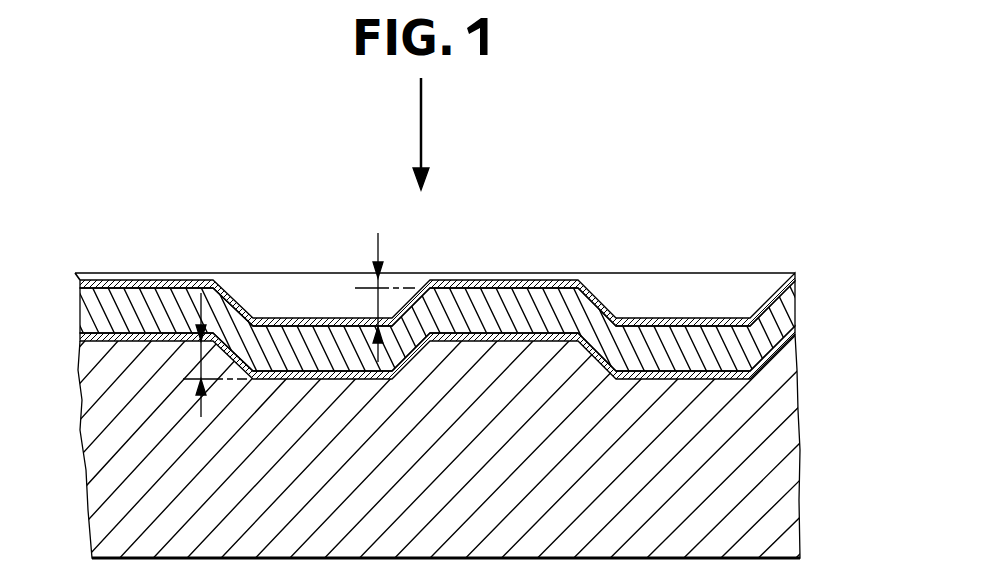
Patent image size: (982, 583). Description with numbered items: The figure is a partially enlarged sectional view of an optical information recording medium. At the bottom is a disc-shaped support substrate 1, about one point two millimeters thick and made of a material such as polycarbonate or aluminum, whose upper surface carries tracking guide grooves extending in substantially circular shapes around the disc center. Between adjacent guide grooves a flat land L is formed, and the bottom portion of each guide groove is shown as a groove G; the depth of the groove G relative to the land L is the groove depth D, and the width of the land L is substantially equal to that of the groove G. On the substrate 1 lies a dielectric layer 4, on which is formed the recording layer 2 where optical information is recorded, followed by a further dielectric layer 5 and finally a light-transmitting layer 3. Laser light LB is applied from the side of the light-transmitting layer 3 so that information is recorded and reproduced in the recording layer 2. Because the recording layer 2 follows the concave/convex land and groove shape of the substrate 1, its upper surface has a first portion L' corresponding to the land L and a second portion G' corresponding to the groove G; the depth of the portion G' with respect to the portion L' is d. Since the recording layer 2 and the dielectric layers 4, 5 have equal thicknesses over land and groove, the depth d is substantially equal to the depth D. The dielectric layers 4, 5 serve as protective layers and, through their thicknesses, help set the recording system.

The support substrate 1 is at (781, 445).
The recording layer 2 is at (780, 317).
The light-transmitting layer 3 is at (757, 290).
The dielectric layer 4 is at (780, 348).
The dielectric layer 5 is at (738, 318).
The land L is at (329, 276).
The first portion corresponding to the land L' is at (504, 248).
The groove G is at (501, 324).
The second portion corresponding to the groove G' is at (497, 267).
The groove depth of the recording layer d is at (378, 305).
The groove depth D is at (198, 363).
The laser light LB is at (423, 118).